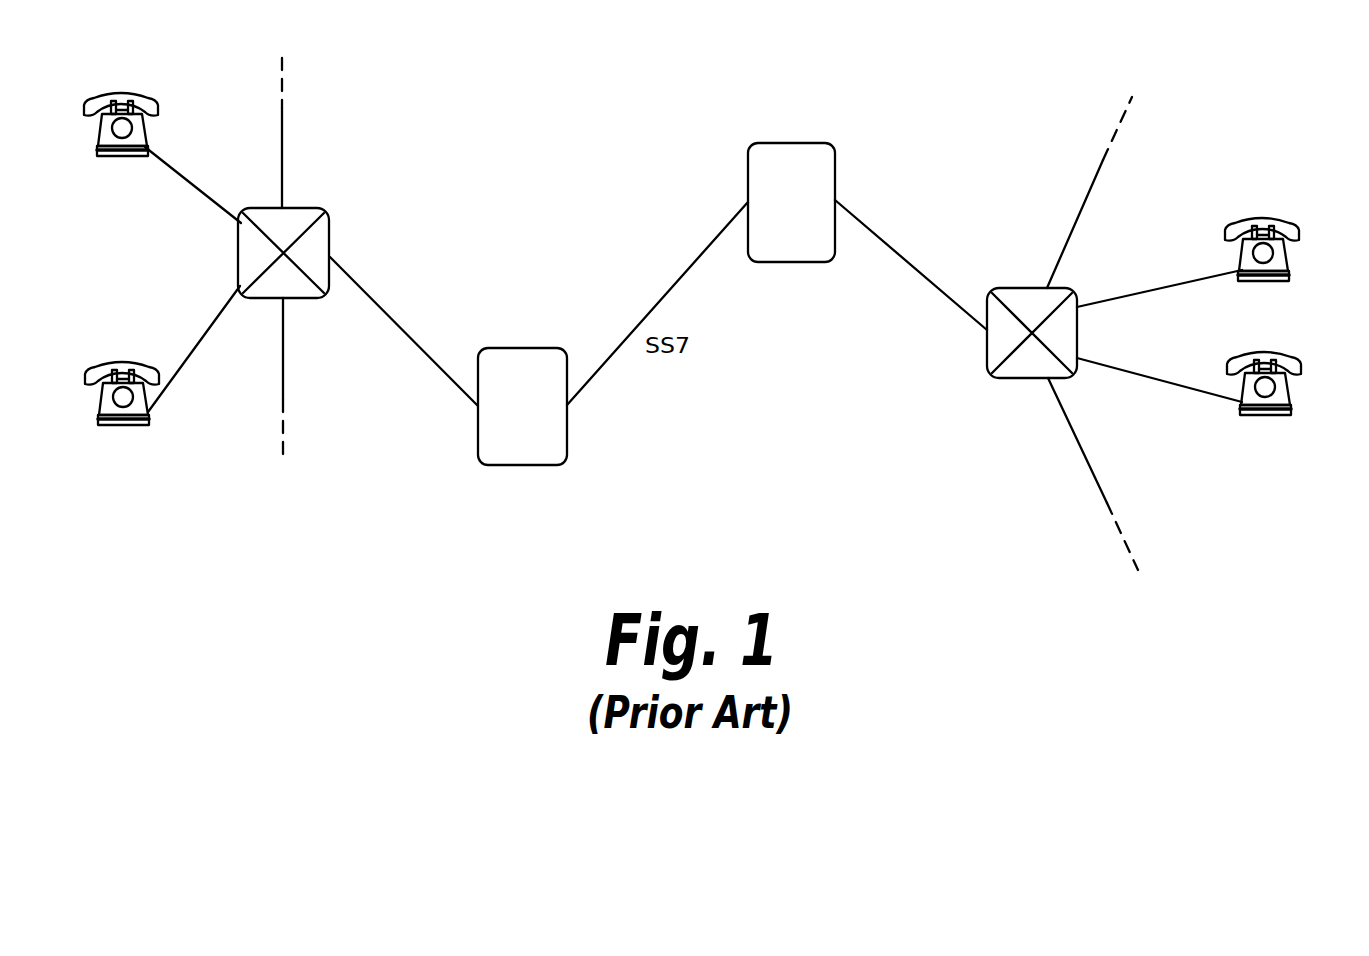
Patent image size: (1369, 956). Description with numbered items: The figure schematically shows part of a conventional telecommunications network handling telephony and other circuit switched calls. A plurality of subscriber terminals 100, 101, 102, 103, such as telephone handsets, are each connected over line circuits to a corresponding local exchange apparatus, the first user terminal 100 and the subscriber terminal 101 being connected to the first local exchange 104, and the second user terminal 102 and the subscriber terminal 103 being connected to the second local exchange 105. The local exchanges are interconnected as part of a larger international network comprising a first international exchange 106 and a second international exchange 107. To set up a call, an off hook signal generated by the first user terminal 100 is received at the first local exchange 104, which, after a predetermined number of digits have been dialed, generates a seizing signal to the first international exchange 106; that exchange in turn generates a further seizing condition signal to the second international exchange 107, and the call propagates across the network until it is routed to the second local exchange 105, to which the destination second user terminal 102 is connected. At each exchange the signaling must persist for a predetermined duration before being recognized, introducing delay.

The first user terminal 100 is at (143, 138).
The subscriber terminal 101 is at (138, 424).
The second user terminal 102 is at (1290, 262).
The subscriber terminal 103 is at (1277, 414).
The first local exchange 104 is at (330, 230).
The second local exchange 105 is at (1012, 378).
The first international exchange 106 is at (508, 465).
The second international exchange 107 is at (767, 262).